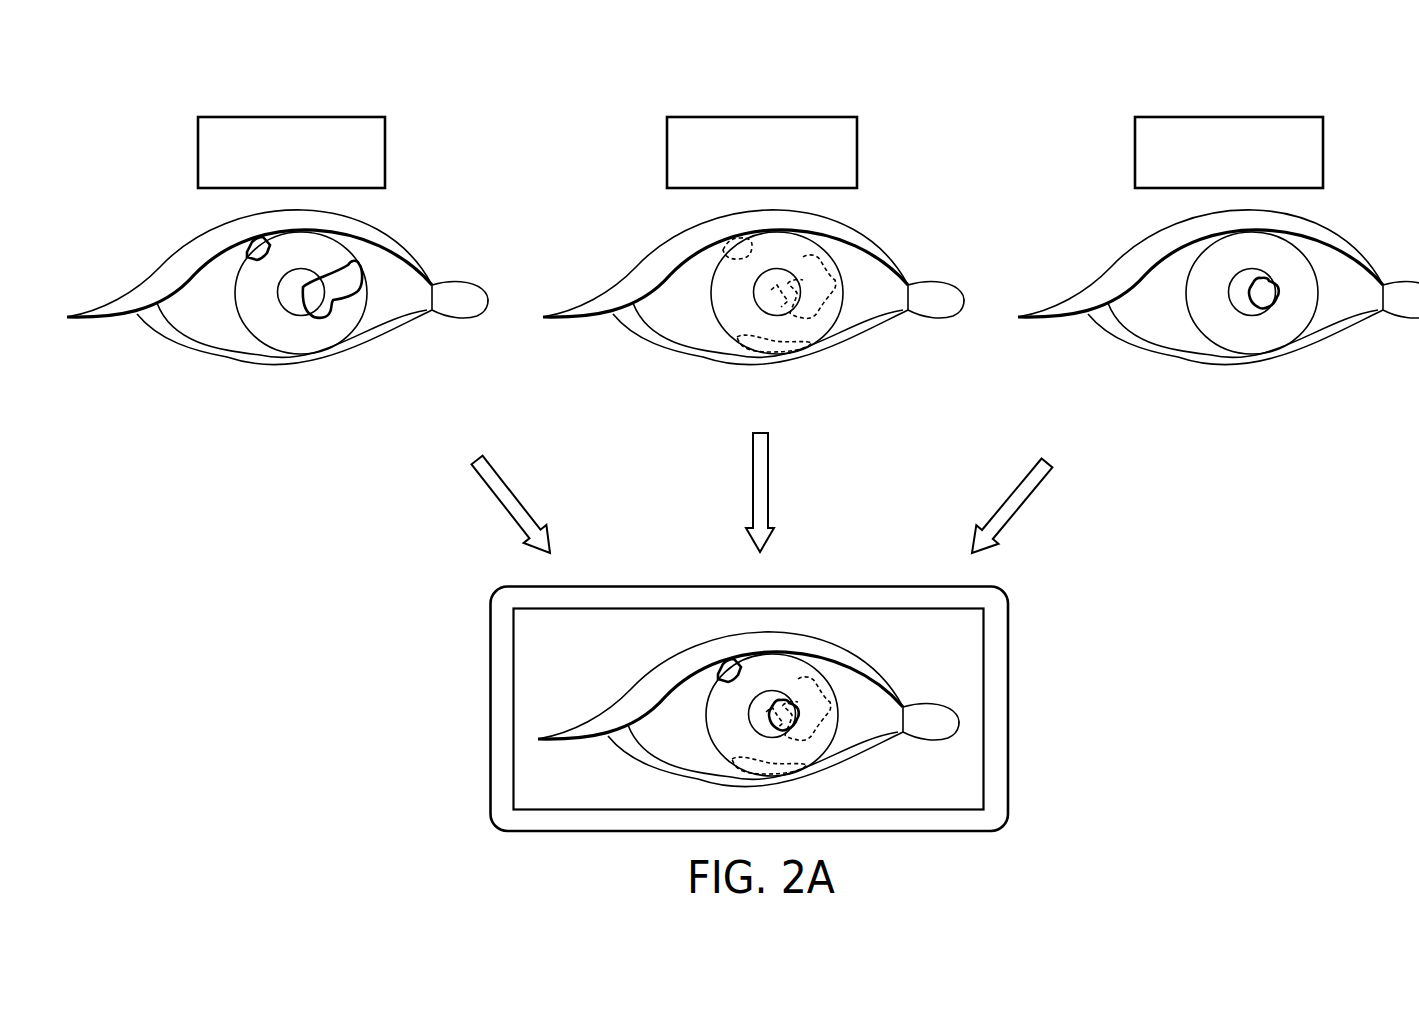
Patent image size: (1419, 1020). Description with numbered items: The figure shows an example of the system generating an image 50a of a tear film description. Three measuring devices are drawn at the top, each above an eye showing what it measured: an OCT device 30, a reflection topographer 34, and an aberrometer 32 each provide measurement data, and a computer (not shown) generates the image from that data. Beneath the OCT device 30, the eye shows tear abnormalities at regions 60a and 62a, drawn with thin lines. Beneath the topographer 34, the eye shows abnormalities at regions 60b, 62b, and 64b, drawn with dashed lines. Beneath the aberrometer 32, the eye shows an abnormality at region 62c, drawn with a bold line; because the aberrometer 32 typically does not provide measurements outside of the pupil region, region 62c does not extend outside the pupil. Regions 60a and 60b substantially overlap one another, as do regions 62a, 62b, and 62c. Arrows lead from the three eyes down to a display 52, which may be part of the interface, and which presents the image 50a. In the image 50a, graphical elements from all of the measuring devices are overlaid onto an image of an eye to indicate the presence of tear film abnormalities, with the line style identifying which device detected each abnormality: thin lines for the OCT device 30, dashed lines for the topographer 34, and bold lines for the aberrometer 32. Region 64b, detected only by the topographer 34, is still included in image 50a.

The OCT device 30 is at (292, 116).
The topographer 34 is at (762, 116).
The aberrometer 32 is at (1230, 116).
The region 60a is at (252, 243).
The region 62a is at (331, 314).
The region 60b is at (726, 242).
The region 62b is at (830, 268).
The region 64b is at (798, 343).
The region 62c is at (1267, 307).
The image 50a is at (973, 667).
The display 52 is at (488, 711).